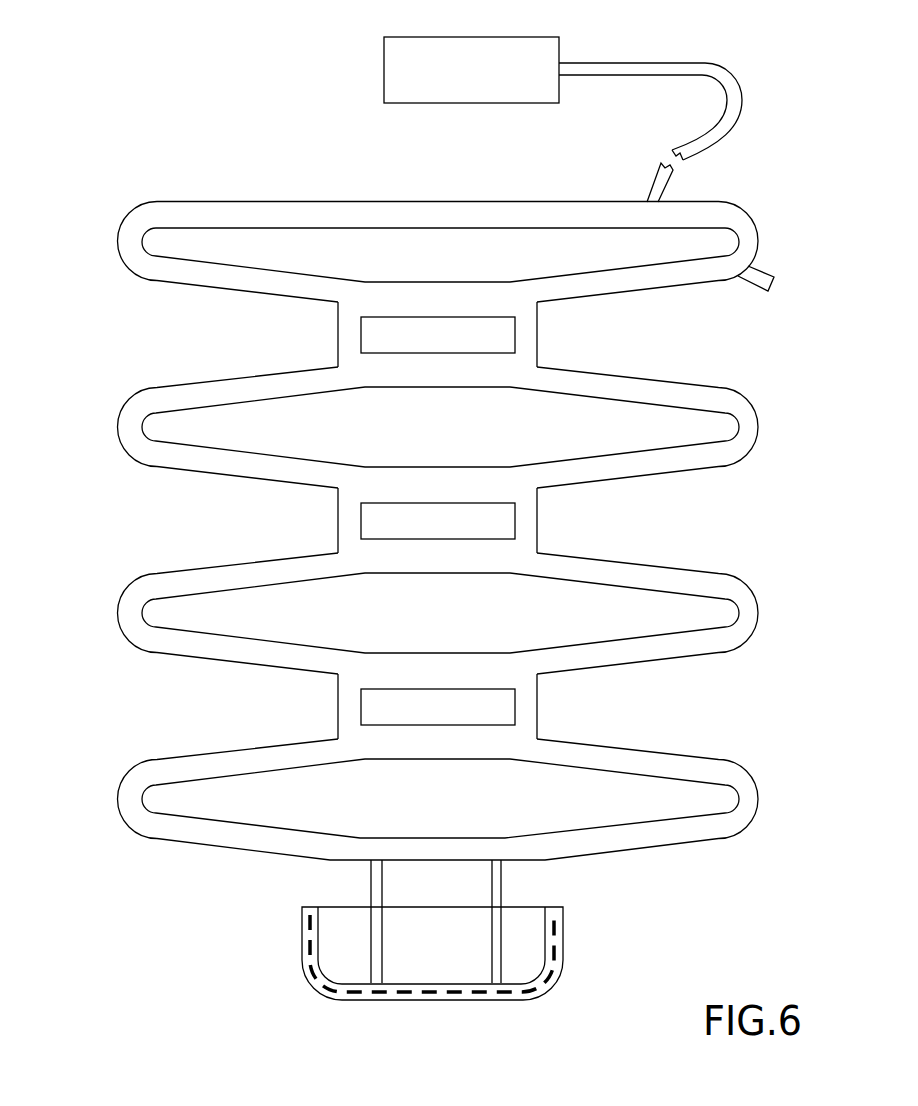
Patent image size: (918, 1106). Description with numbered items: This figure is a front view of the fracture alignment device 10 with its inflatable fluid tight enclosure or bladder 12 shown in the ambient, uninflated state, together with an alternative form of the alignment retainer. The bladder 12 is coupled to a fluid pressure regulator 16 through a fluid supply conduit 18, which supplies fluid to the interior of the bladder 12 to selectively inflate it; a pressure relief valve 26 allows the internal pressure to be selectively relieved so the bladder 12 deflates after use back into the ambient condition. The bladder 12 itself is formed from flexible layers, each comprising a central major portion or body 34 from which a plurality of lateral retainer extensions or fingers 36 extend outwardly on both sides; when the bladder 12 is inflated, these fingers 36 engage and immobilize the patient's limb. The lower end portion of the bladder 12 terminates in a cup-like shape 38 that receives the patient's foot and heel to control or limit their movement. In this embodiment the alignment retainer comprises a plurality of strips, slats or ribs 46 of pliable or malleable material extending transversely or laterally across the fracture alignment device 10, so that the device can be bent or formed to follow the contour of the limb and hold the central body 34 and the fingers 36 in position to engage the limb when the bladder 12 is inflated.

The fracture alignment device 10 is at (191, 130).
The inflatable fluid tight enclosure 12 is at (365, 174).
The fluid pressure regulator 16 is at (360, 42).
The fluid supply conduit 18 is at (723, 113).
The pressure relief valve 26 is at (762, 287).
The central major portion 34 is at (337, 536).
The lateral retainer extensions 36 is at (140, 223).
The cup-like shape 38 is at (270, 970).
The strips, slats or ribs 46 is at (668, 238).